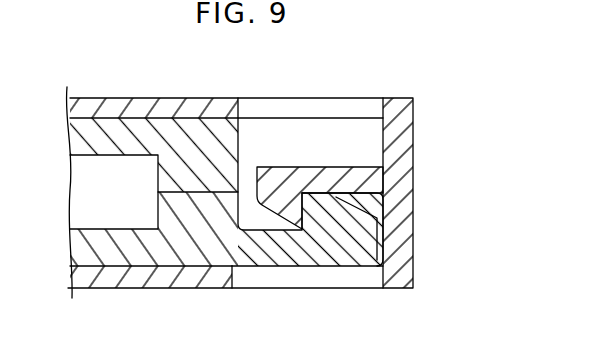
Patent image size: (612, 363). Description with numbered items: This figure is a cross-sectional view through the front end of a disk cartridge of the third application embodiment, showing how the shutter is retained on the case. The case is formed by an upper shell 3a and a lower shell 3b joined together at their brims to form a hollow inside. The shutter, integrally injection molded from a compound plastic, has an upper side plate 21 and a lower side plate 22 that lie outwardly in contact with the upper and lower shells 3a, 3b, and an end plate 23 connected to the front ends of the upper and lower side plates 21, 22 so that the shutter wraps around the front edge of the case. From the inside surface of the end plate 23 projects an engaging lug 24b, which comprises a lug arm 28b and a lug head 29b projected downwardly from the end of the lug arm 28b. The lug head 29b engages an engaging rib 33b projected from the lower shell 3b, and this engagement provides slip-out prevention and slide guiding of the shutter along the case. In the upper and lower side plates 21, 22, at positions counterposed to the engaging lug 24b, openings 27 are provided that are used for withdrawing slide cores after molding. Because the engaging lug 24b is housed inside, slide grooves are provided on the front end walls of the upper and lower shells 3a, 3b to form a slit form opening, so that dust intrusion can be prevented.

The upper shell 3a is at (107, 129).
The lower shell 3b is at (108, 250).
The upper side plate 21 is at (156, 106).
The lower side plate 22 is at (166, 278).
The end plate 23 is at (410, 139).
The engaging lug 24b is at (272, 161).
The opening 27 is at (382, 112).
The lug arm 28b is at (344, 178).
The lug head 29b is at (284, 222).
The engaging rib 33b is at (324, 188).